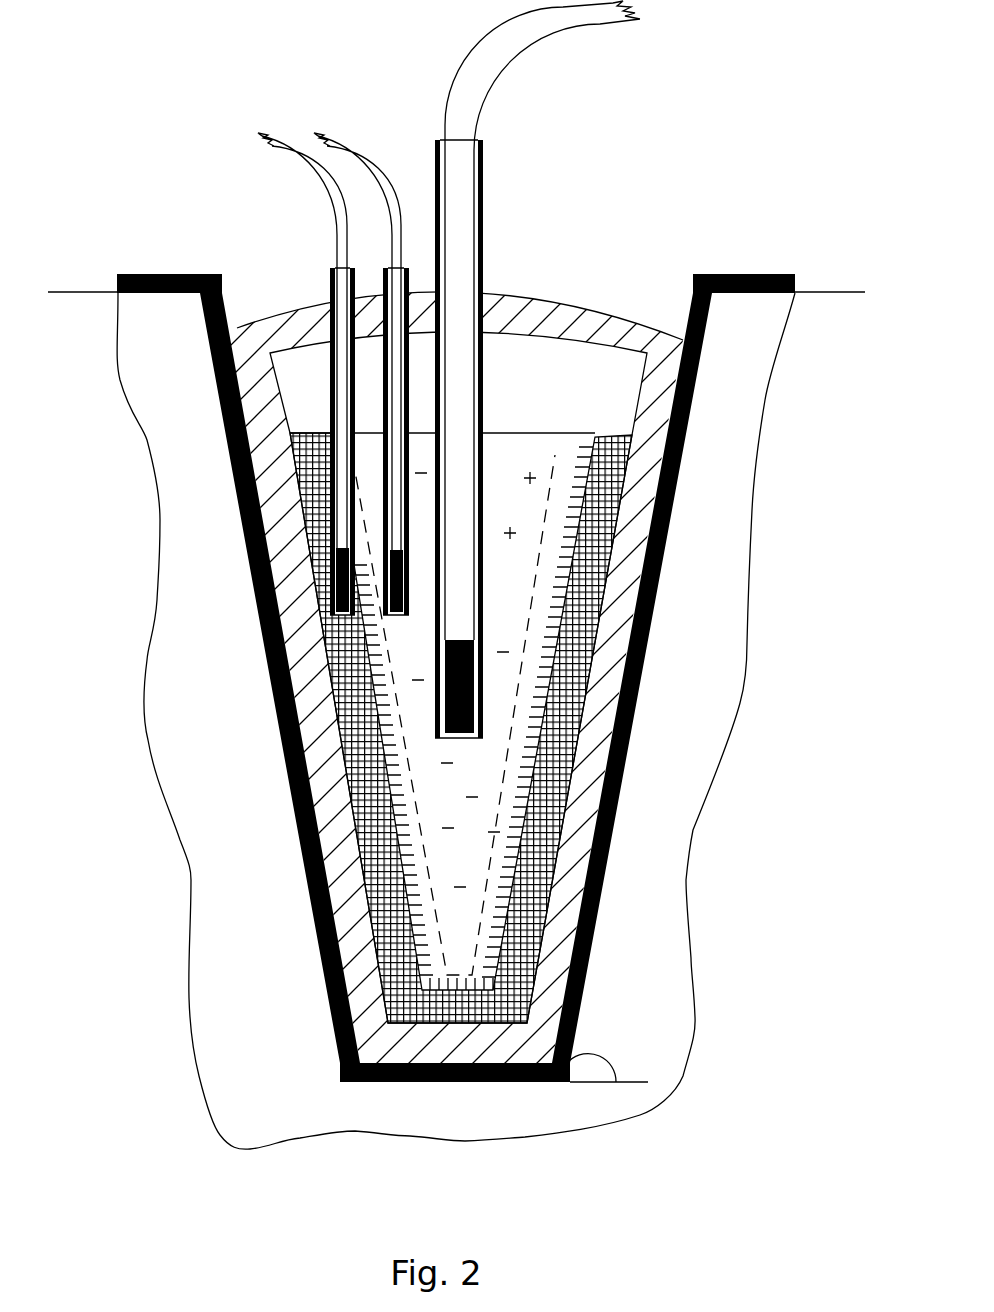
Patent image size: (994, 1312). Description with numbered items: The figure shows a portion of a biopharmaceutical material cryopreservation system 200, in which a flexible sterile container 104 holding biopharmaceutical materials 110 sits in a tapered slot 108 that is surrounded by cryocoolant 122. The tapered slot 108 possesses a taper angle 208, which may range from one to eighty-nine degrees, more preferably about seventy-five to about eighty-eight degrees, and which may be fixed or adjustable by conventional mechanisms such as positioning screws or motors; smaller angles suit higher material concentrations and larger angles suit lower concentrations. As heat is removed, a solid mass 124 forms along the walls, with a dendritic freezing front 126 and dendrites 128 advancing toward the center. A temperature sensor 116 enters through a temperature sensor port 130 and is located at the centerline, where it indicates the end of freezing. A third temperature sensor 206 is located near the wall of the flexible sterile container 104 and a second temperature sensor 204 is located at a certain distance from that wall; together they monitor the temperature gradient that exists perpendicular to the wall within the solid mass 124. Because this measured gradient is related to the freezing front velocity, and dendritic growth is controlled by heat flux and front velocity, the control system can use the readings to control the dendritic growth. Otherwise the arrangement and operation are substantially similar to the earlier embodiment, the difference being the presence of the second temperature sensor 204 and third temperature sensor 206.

The biopharmaceutical material cryopreservation system 200 is at (462, 635).
The flexible sterile container 104 is at (247, 318).
The tapered slot 108 is at (232, 470).
The biopharmaceutical materials 110 is at (528, 493).
The temperature sensor 116 is at (483, 650).
The cryocoolant 122 is at (744, 698).
The solid mass 124 is at (660, 575).
The dendritic freezing front 126 is at (565, 585).
The dendrites 128 is at (563, 790).
The temperature sensor port 130 is at (484, 180).
The second temperature sensor 204 is at (313, 175).
The third temperature sensor 206 is at (334, 146).
The taper angle 208 is at (600, 1052).